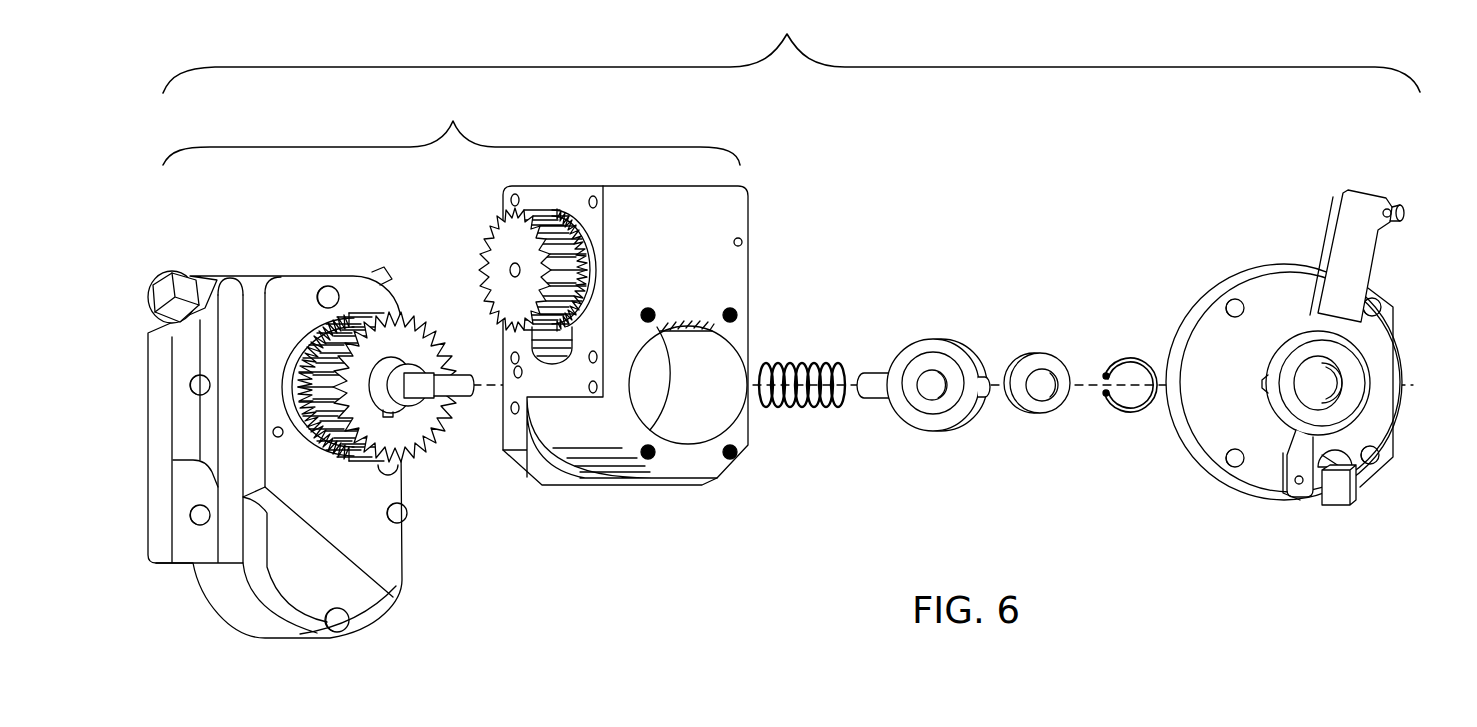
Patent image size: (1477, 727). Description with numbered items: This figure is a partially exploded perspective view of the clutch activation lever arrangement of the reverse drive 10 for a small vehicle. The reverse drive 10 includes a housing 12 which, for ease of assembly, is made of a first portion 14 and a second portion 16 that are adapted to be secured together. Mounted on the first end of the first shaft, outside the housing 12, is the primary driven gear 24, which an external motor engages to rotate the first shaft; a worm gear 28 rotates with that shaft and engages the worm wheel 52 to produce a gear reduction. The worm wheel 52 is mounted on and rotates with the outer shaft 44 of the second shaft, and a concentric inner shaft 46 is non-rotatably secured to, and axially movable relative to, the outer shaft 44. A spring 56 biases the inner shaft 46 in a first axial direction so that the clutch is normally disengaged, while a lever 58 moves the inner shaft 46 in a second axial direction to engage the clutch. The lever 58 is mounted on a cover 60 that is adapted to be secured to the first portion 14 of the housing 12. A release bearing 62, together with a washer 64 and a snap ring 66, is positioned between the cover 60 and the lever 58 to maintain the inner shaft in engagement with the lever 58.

The reverse drive 10 is at (791, 46).
The housing 12 is at (451, 126).
The first portion 14 is at (659, 335).
The second portion 16 is at (279, 271).
The primary driven gear 24 is at (498, 255).
The worm gear 28 is at (689, 328).
The outer shaft 44 is at (390, 358).
The inner shaft 46 is at (424, 372).
The worm wheel 52 is at (432, 452).
The spring 56 is at (800, 362).
The lever 58 is at (1363, 252).
The cover 60 is at (1267, 281).
The release bearing 62 is at (918, 340).
The washer 64 is at (1040, 354).
The snap ring 66 is at (1124, 360).